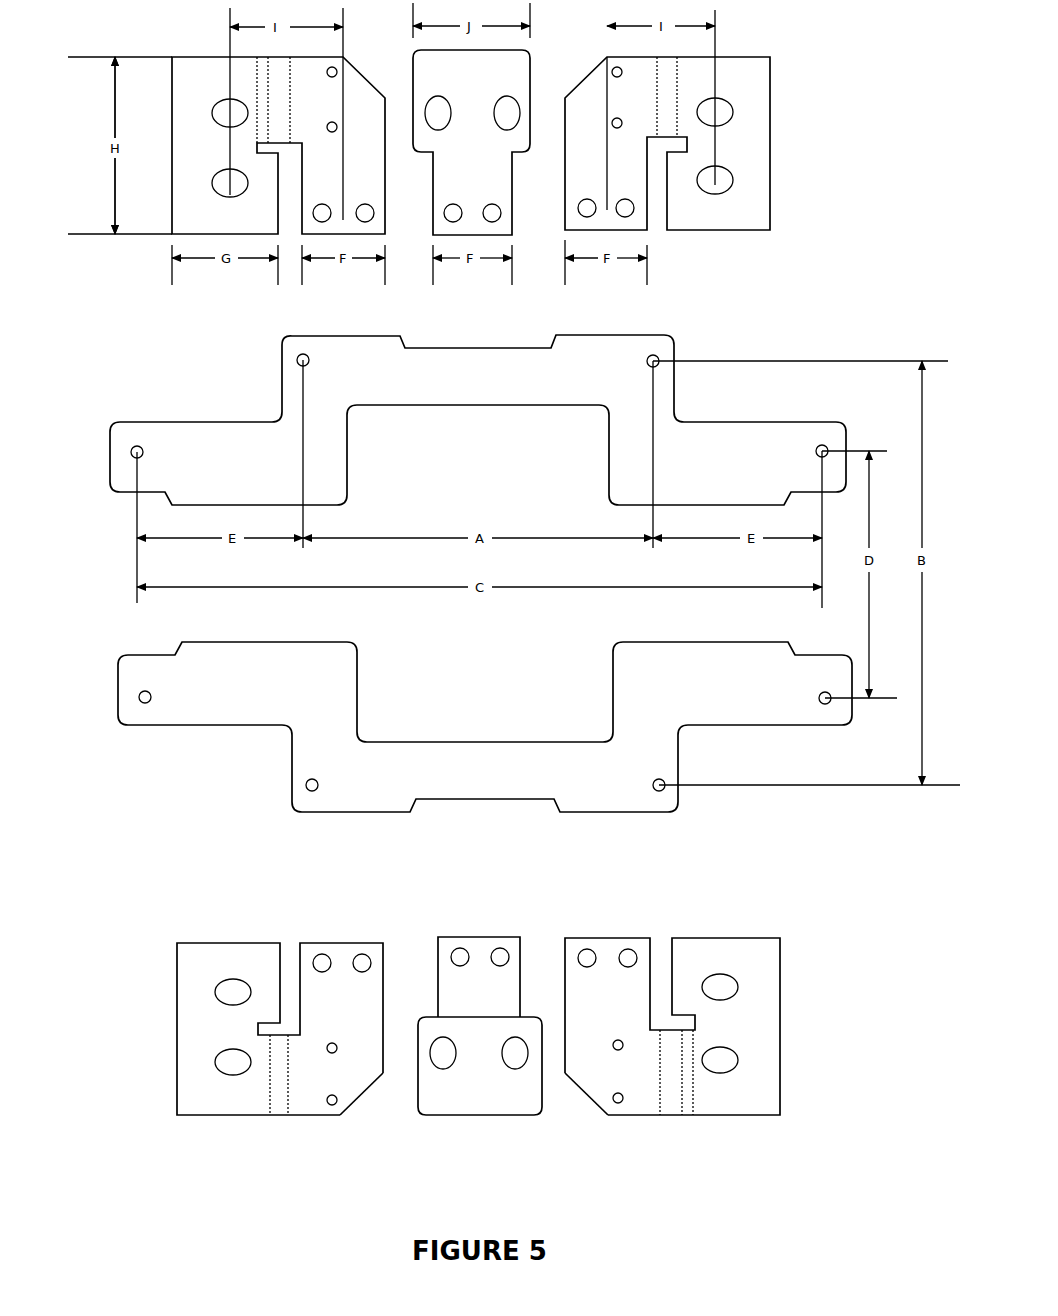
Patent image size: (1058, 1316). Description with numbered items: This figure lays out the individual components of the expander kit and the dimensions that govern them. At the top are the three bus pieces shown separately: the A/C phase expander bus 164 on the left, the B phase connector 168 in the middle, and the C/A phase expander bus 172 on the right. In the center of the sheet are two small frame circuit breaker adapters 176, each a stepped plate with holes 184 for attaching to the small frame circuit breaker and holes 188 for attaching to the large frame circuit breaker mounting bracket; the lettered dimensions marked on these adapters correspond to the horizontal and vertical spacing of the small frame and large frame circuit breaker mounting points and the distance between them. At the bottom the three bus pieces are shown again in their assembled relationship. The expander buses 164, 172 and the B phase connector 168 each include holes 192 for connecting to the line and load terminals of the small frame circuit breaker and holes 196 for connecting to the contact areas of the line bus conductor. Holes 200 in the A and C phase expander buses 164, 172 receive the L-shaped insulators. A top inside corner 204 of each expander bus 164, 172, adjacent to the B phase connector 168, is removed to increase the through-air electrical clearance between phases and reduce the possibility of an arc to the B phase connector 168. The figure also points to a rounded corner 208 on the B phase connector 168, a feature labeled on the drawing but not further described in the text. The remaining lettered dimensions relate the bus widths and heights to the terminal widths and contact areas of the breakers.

The A/C phase expander bus 164 is at (191, 53).
The B phase connector 168 is at (487, 604).
The C/A phase expander bus 172 is at (757, 50).
The small frame circuit breaker adapter 176 is at (447, 606).
The holes 184 is at (307, 793).
The holes 188 is at (144, 706).
The holes 192 is at (614, 952).
The holes 196 is at (216, 1050).
The holes 200 is at (328, 1054).
The top inside corner 204 is at (362, 1098).
The rounded corner 208 is at (430, 1103).